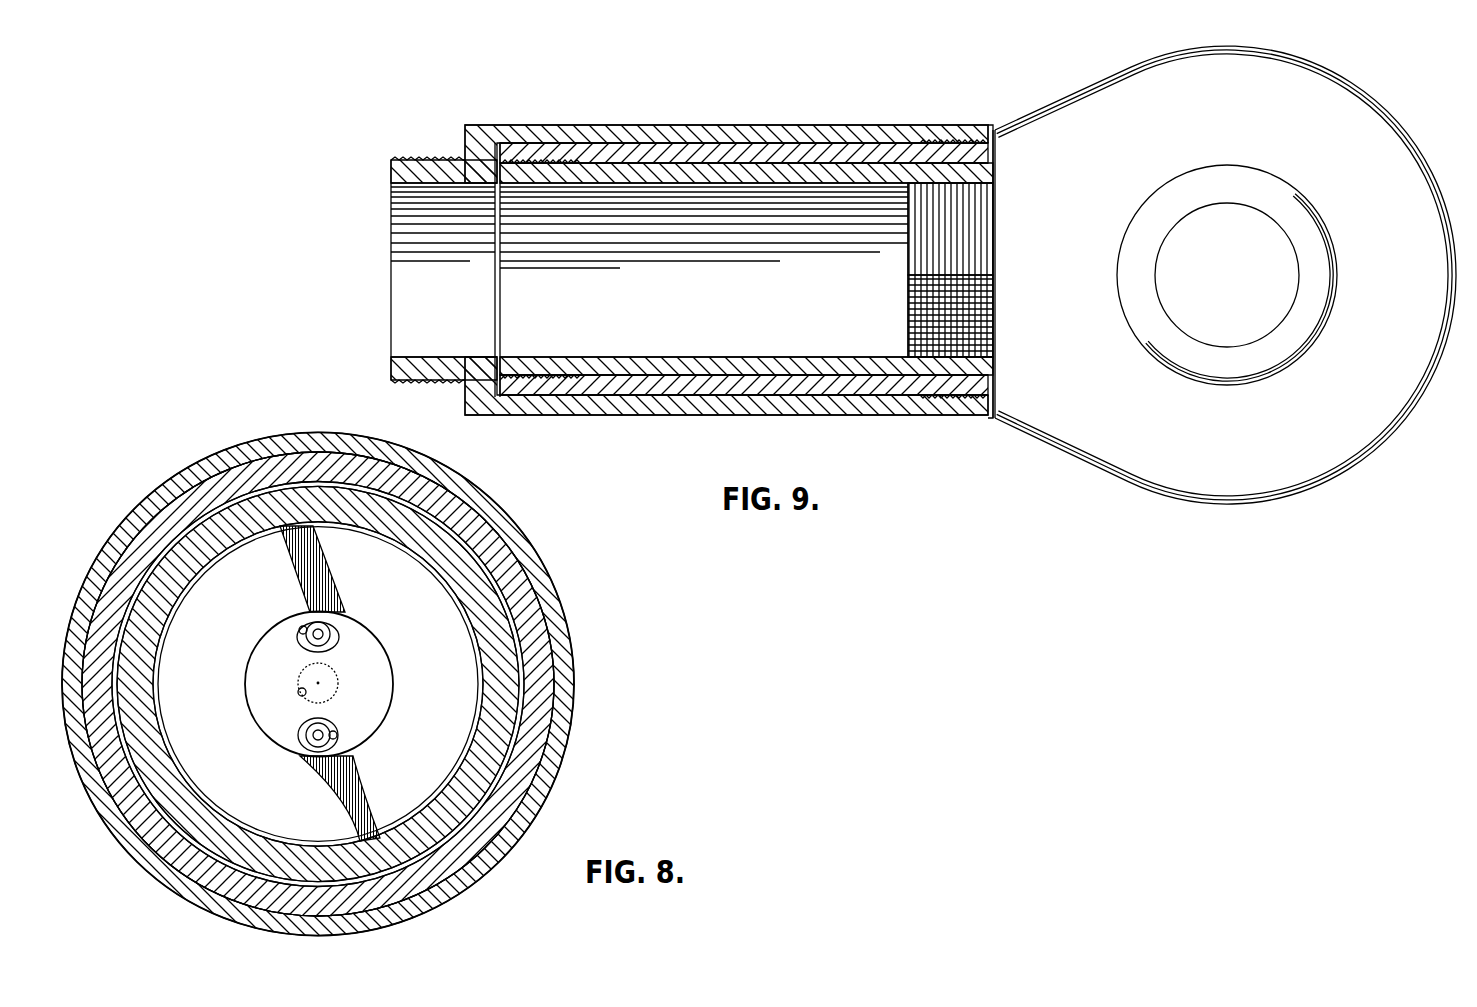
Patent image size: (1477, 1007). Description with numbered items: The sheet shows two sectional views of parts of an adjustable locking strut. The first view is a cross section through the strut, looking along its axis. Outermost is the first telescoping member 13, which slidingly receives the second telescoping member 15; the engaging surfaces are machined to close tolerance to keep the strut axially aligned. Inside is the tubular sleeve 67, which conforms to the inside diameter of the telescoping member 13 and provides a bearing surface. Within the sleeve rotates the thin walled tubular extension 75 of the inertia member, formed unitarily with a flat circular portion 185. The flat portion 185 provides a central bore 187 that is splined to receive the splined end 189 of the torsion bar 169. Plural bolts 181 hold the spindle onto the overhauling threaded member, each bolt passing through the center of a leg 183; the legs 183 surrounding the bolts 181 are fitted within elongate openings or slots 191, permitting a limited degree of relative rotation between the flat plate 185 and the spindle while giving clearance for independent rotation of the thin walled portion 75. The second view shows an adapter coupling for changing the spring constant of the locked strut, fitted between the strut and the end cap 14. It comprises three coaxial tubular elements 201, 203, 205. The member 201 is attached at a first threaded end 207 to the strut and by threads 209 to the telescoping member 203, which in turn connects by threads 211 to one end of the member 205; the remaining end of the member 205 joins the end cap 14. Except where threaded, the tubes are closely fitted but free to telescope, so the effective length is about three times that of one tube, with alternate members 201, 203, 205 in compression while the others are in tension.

In FIG. 8, the first telescoping member 13 is at (527, 562).
In FIG. 9, the end cap 14 is at (1088, 80).
In FIG. 8, the second telescoping member 15 is at (560, 595).
In FIG. 8, the tubular sleeve 67 is at (515, 657).
In FIG. 8, the thin walled tubular extension 75 is at (480, 708).
In FIG. 8, the torsion bar 169 is at (318, 683).
In FIG. 8, the bolts 181 is at (318, 634).
In FIG. 8, the legs 183 is at (338, 640).
In FIG. 8, the flat circular portion 185 is at (436, 677).
In FIG. 8, the central bore 187 is at (302, 692).
In FIG. 8, the splined end 189 is at (338, 695).
In FIG. 8, the elongate openings or slots 191 is at (303, 630).
In FIG. 9, the tubular element 201 is at (658, 125).
In FIG. 9, the telescoping member 203 is at (718, 145).
In FIG. 9, the tubular element 205 is at (780, 165).
In FIG. 9, the first threaded end 207 is at (414, 158).
In FIG. 9, the threads 209 is at (957, 140).
In FIG. 9, the threads 211 is at (528, 160).